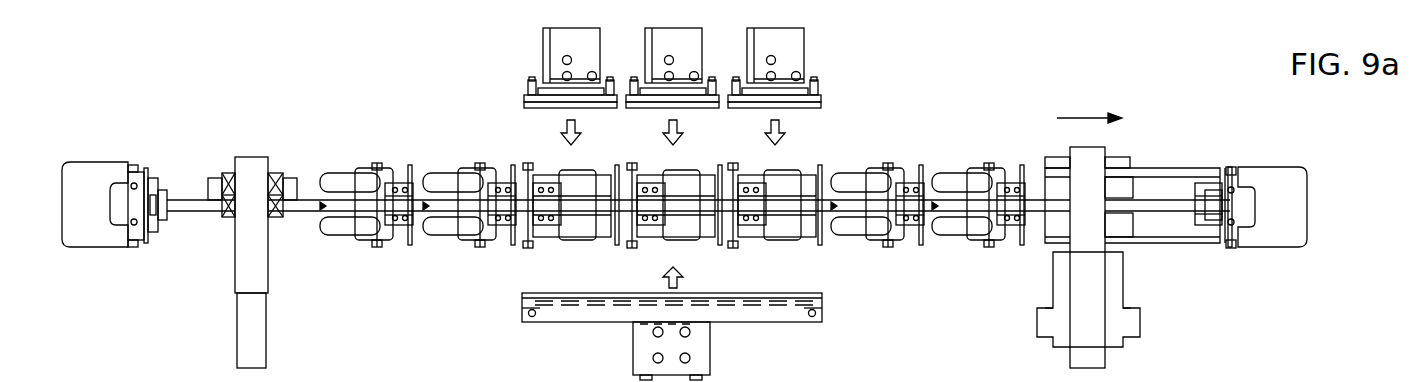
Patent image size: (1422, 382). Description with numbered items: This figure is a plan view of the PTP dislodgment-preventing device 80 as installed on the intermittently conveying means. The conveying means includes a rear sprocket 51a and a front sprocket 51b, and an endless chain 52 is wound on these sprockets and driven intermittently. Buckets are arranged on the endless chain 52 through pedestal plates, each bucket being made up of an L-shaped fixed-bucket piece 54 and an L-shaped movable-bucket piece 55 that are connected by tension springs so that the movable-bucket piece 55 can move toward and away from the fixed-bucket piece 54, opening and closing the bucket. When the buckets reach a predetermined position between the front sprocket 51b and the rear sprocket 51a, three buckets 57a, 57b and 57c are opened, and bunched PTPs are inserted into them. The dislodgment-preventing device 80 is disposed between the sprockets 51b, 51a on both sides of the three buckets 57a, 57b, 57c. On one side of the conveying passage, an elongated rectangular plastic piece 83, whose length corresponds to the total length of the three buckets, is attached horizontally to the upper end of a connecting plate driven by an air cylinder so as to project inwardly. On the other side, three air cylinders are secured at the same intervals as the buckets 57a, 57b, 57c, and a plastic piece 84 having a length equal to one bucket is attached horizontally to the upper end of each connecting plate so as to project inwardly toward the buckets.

The rear sprocket 51a is at (190, 198).
The front sprocket 51b is at (1146, 205).
The endless chain 52 is at (1197, 205).
The fixed-bucket piece 54 is at (412, 165).
The movable-bucket piece 55 is at (376, 182).
The bucket 57a is at (789, 163).
The bucket 57b is at (682, 164).
The bucket 57c is at (553, 165).
The PTP dislodgment-preventing device 80 is at (691, 201).
The elongated rectangular plastic piece 83 is at (604, 302).
The plastic piece 84 is at (524, 105).